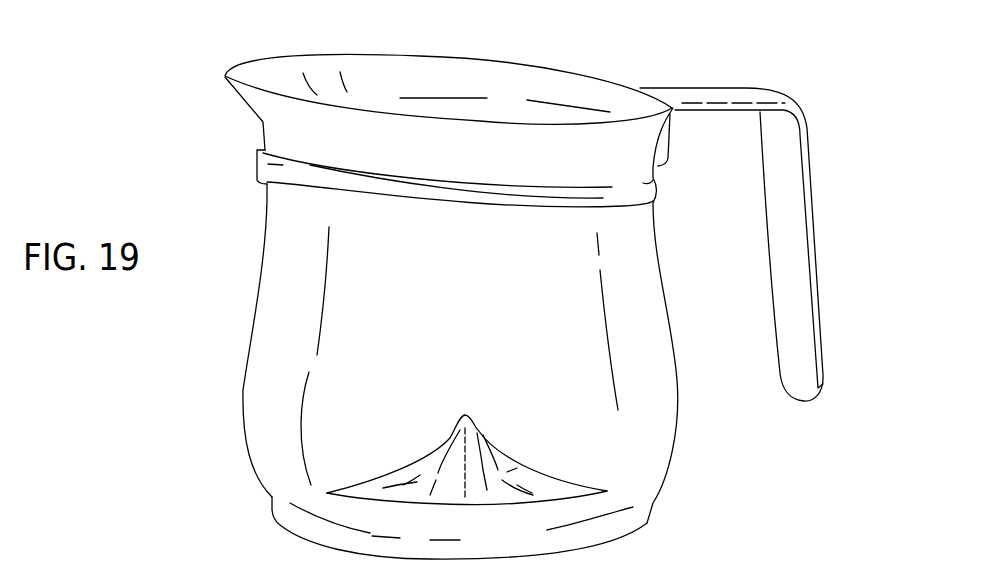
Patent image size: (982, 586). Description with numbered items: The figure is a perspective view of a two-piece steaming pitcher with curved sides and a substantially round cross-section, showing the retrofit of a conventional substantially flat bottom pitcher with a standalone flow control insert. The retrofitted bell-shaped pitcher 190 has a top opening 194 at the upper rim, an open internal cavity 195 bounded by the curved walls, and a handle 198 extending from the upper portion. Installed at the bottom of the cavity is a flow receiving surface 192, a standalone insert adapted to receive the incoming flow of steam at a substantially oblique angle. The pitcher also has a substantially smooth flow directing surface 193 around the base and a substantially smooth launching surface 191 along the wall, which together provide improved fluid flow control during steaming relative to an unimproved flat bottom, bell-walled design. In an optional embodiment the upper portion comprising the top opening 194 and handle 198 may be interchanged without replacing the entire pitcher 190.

The retrofitted bell-shaped pitcher 190 is at (259, 73).
The launching surface 191 is at (247, 352).
The flow receiving surface 192 is at (533, 477).
The flow directing surface 193 is at (272, 498).
The top opening 194 is at (447, 82).
The open internal cavity 195 is at (472, 293).
The handle 198 is at (782, 140).